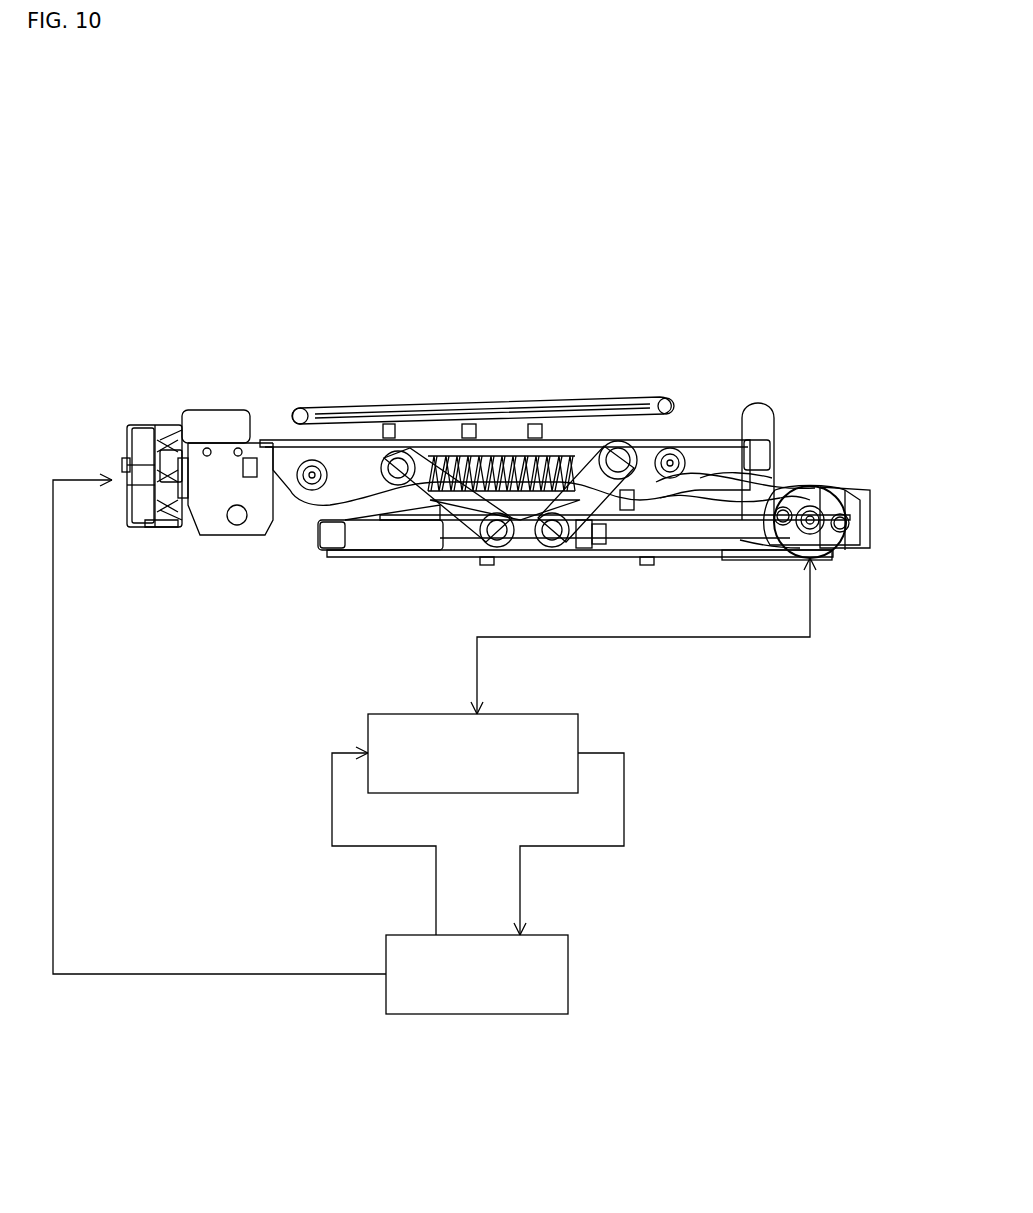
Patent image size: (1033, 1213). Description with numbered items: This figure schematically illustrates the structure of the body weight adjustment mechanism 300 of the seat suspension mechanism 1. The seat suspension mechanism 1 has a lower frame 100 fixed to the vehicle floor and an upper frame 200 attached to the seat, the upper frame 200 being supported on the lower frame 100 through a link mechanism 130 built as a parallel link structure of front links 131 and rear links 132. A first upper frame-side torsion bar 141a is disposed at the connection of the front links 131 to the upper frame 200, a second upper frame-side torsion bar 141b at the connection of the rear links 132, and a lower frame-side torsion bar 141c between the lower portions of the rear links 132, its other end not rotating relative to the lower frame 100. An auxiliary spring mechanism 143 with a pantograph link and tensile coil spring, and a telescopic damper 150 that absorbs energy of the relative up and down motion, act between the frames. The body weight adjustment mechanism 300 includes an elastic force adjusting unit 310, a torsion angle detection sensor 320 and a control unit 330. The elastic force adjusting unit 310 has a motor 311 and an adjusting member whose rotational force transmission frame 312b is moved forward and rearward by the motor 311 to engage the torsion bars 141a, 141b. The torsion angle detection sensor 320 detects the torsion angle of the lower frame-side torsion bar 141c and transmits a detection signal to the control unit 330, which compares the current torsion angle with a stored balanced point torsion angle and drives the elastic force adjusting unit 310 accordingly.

The seat suspension mechanism 1 is at (780, 408).
The lower frame 100 is at (362, 538).
The link mechanism 130 is at (402, 512).
The front link 131 is at (412, 525).
The rear link 132 is at (740, 510).
The first upper frame-side torsion bar 141a is at (307, 445).
The second upper frame-side torsion bar 141b is at (650, 420).
The lower frame-side torsion bar 141c is at (846, 558).
The auxiliary spring mechanism 143 is at (577, 548).
The damper 150 is at (528, 492).
The upper frame 200 is at (720, 412).
The body weight adjustment mechanism 300 is at (254, 994).
The elastic force adjusting unit 310 is at (136, 418).
The motor 311 is at (127, 498).
The rotational force transmission frame 312b is at (528, 400).
The torsion angle detection sensor 320 is at (522, 714).
The control unit 330 is at (544, 935).